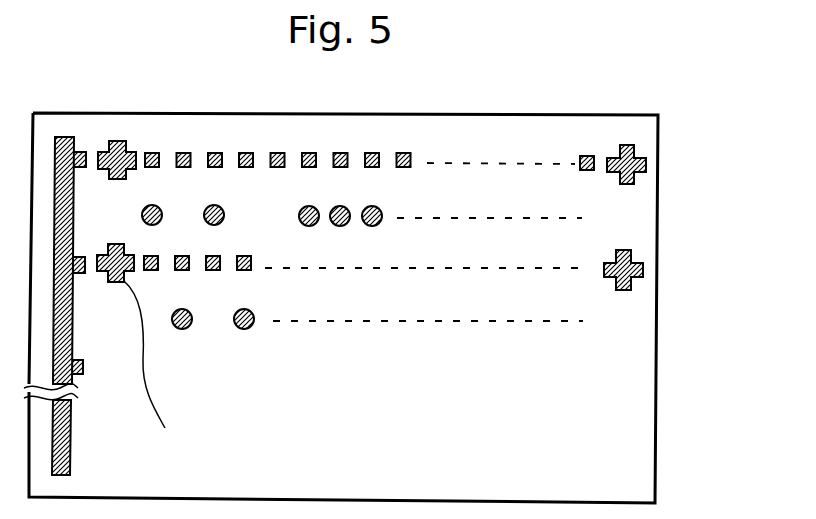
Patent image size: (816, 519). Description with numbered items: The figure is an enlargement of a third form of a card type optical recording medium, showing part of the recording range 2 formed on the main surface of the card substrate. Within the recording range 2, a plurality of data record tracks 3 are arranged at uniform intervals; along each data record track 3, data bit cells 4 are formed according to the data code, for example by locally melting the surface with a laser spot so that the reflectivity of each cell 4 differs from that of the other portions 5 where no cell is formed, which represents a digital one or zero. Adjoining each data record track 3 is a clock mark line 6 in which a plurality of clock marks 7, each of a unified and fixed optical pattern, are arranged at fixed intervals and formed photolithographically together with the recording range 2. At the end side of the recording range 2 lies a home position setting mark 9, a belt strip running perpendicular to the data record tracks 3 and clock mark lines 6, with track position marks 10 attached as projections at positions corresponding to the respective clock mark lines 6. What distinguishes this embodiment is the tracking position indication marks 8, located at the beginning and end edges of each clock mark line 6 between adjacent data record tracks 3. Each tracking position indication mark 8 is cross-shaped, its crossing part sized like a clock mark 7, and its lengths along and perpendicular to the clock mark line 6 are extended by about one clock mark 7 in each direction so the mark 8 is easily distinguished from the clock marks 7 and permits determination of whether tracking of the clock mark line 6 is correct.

The recording range 2 is at (658, 136).
The data record track 3 is at (600, 216).
The data bit cell 4 is at (141, 214).
The other portions 5 is at (266, 212).
The clock mark line 6 is at (413, 156).
The clock mark 7 is at (214, 153).
The tracking position indication mark 8 is at (122, 141).
The home position setting mark 9 is at (66, 137).
The track position mark 10 is at (86, 152).